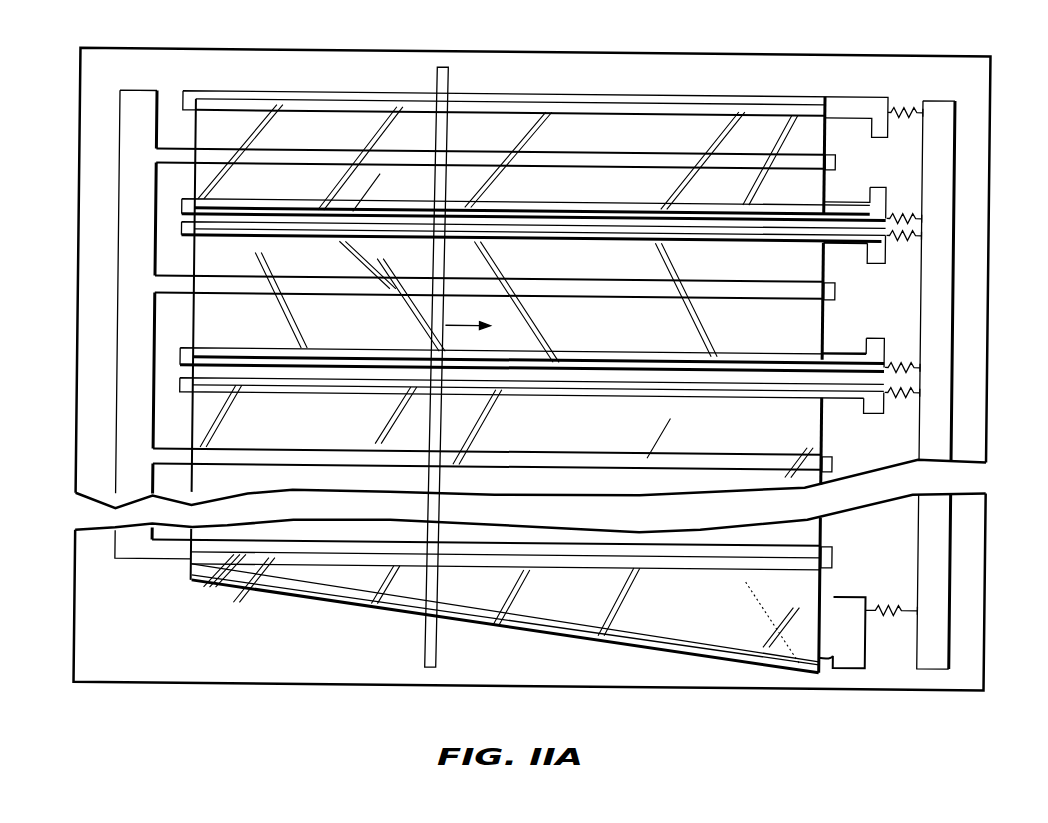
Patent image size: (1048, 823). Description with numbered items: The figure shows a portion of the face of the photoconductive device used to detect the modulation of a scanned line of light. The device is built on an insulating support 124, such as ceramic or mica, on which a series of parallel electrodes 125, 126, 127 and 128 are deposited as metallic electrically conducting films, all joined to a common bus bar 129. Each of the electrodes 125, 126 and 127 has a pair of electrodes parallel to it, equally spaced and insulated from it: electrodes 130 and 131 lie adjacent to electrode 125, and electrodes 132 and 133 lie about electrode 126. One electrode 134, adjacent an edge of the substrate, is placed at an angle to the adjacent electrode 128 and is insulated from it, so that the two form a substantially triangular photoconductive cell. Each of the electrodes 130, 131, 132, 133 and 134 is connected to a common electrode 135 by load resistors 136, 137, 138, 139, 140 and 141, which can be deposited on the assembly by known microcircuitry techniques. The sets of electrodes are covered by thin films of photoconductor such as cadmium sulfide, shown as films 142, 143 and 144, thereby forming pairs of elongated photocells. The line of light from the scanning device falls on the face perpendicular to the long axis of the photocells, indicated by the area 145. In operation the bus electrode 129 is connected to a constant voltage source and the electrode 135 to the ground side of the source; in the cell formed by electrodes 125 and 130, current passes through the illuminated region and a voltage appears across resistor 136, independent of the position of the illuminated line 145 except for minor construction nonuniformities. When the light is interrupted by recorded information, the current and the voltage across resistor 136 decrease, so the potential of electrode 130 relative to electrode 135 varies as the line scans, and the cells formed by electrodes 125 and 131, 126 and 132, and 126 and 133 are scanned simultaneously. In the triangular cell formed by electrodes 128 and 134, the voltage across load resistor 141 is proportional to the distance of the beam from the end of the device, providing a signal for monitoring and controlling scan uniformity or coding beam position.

The insulating support 124 is at (661, 46).
The electrode 125 is at (838, 154).
The electrode 126 is at (838, 285).
The electrode 127 is at (841, 456).
The electrode 128 is at (836, 549).
The common bus bar 129 is at (137, 96).
The electrode 130 is at (851, 92).
The electrode 131 is at (872, 192).
The electrode 132 is at (871, 248).
The electrode 133 is at (872, 334).
The electrode 134 is at (875, 653).
The common electrode 135 is at (947, 181).
The load resistor 136 is at (913, 96).
The load resistor 137 is at (905, 198).
The load resistor 138 is at (908, 234).
The load resistor 139 is at (907, 355).
The load resistor 140 is at (909, 387).
The load resistor 141 is at (905, 598).
The photoconductor film 142 is at (263, 117).
The photoconductor film 143 is at (206, 260).
The photoconductor film 144 is at (510, 592).
The illuminated line 145 is at (438, 62).